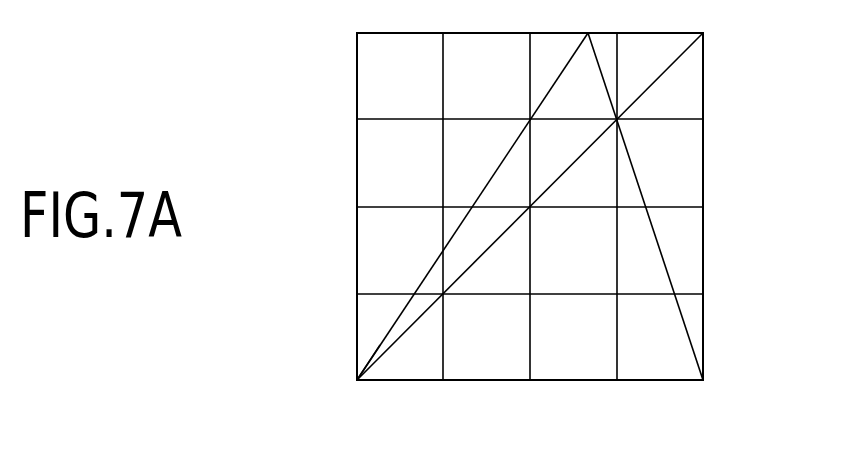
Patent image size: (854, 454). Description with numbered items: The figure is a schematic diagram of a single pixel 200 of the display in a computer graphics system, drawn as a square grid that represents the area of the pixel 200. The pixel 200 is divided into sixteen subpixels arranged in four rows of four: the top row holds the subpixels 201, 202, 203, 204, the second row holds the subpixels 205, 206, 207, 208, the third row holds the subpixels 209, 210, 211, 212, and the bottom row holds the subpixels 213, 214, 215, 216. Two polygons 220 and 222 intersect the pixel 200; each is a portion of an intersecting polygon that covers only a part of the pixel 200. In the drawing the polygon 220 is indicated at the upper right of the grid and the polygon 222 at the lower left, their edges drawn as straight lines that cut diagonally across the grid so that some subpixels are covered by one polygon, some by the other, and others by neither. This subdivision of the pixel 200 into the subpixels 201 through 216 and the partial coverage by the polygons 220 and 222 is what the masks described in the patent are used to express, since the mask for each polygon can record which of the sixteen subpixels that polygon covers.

The pixel 200 is at (253, 106).
The polygon 220 is at (697, 46).
The polygon 222 is at (370, 360).
The subpixel 201 is at (400, 76).
The subpixel 202 is at (486, 76).
The subpixel 203 is at (573, 76).
The subpixel 204 is at (660, 76).
The subpixel 205 is at (400, 163).
The subpixel 206 is at (486, 163).
The subpixel 207 is at (573, 163).
The subpixel 208 is at (660, 163).
The subpixel 209 is at (400, 250).
The subpixel 210 is at (486, 250).
The subpixel 211 is at (573, 250).
The subpixel 212 is at (660, 250).
The subpixel 213 is at (400, 337).
The subpixel 214 is at (486, 337).
The subpixel 215 is at (573, 337).
The subpixel 216 is at (660, 337).